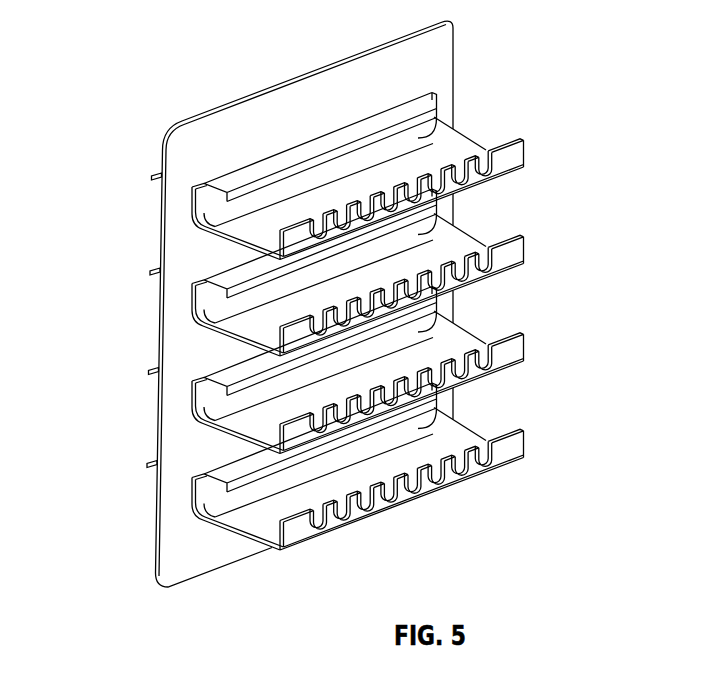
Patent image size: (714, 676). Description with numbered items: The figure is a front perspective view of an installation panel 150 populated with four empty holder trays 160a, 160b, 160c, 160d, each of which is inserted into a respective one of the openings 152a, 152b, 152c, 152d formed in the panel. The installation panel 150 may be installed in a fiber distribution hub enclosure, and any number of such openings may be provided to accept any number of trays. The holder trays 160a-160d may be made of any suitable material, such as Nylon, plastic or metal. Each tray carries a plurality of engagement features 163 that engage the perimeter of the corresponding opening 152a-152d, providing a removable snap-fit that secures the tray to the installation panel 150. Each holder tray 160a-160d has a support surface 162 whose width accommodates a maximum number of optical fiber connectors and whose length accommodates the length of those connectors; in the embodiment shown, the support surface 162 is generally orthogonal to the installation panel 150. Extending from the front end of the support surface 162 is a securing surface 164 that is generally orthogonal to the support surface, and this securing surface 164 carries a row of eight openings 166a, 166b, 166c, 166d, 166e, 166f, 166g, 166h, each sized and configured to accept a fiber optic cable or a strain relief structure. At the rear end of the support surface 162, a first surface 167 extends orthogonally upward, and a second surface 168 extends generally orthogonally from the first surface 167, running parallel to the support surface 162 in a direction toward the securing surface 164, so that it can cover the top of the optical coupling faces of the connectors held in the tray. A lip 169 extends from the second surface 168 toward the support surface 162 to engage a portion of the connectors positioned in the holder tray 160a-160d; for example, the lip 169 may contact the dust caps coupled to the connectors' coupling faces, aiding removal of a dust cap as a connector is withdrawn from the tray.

The installation panel 150 is at (143, 143).
The opening 152a is at (194, 212).
The opening 152b is at (194, 308).
The opening 152c is at (194, 406).
The opening 152d is at (194, 498).
The holder tray 160a is at (332, 323).
The holder tray 160b is at (336, 272).
The holder tray 160c is at (337, 370).
The holder tray 160d is at (349, 489).
The support surface 162 is at (472, 140).
The engagement feature 163 is at (152, 177).
The securing surface 164 is at (523, 167).
The opening 166a is at (320, 530).
The opening 166b is at (346, 521).
The opening 166c is at (370, 512).
The opening 166d is at (393, 502).
The opening 166e is at (418, 492).
The opening 166f is at (440, 482).
The opening 166g is at (462, 472).
The opening 166h is at (487, 462).
The first surface 167 is at (207, 203).
The second surface 168 is at (247, 172).
The lip 169 is at (445, 113).